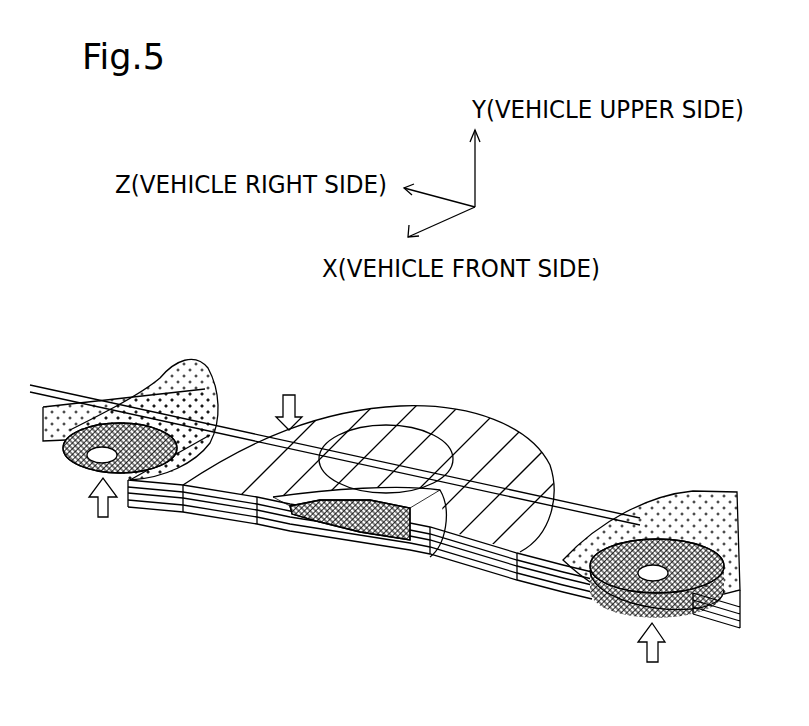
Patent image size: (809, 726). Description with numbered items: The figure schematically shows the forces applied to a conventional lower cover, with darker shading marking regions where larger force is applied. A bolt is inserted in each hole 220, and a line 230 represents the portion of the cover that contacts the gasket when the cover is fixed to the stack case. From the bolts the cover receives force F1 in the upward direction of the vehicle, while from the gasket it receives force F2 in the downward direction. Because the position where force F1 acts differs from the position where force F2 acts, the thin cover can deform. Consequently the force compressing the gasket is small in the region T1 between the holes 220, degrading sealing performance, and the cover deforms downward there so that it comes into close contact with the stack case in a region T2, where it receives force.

The hole 220 is at (97, 432).
The line 230 is at (553, 497).
The region between the holes T1 is at (405, 430).
The close-contact region T2 is at (318, 508).
The upward force F1 is at (377, 586).
The downward force F2 is at (289, 400).